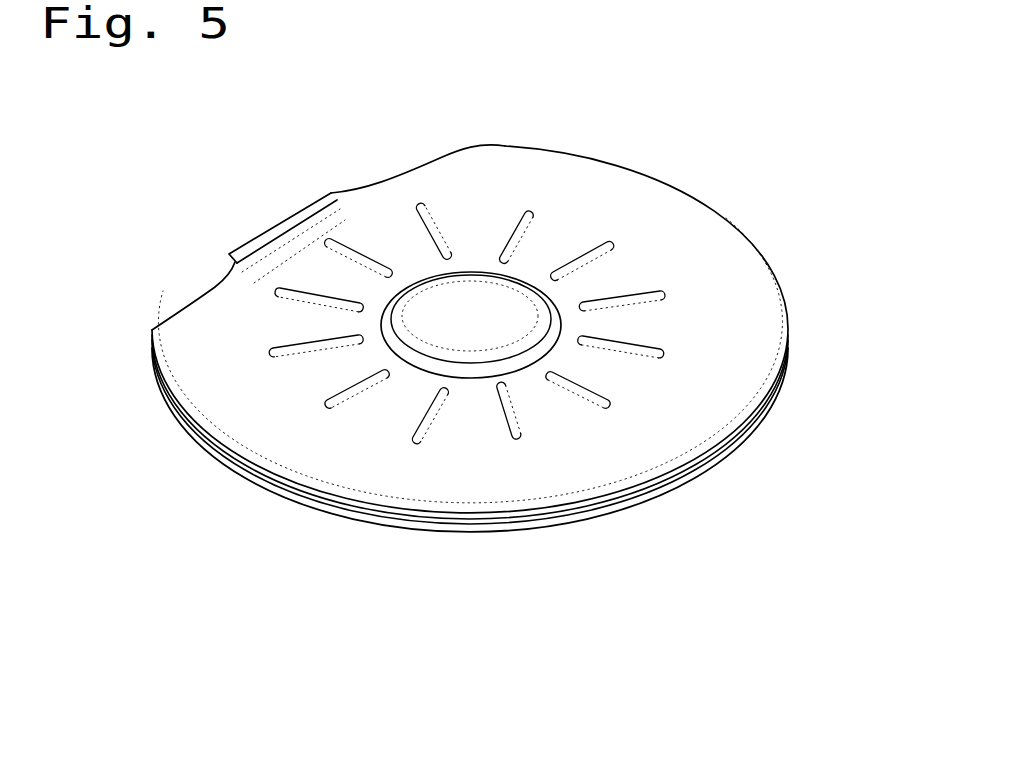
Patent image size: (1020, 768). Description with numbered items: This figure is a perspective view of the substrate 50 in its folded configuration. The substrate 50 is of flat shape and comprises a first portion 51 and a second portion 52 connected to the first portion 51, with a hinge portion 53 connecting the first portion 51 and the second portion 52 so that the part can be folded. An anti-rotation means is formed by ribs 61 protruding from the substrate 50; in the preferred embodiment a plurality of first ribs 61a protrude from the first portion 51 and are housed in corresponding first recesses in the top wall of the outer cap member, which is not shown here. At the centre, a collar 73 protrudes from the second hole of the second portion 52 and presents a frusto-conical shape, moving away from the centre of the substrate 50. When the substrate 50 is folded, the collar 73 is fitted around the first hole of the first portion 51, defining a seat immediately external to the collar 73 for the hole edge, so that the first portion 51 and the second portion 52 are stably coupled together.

The substrate 50 is at (768, 164).
The first portion 51 is at (673, 428).
The second portion 52 is at (660, 495).
The hinge portion 53 is at (253, 237).
The ribs 61 is at (362, 241).
The first ribs 61a is at (587, 263).
The collar 73 is at (470, 280).